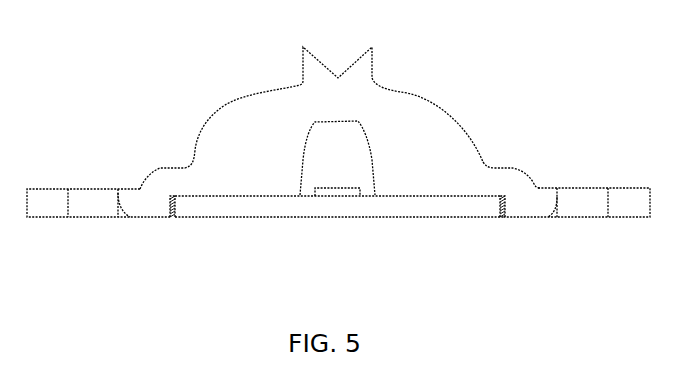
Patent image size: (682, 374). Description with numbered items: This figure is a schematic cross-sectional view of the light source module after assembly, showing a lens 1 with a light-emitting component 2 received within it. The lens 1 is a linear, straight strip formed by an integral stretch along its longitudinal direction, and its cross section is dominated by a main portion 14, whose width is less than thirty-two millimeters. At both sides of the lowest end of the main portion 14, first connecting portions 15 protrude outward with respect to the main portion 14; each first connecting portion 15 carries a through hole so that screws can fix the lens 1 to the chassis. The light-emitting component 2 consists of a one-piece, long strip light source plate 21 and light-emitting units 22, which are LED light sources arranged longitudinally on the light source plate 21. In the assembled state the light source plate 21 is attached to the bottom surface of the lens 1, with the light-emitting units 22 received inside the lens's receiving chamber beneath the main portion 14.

The lens 1 is at (402, 127).
The main portion 14 is at (472, 172).
The first connecting portion 15 is at (577, 210).
The light-emitting component 2 is at (222, 208).
The light source plate 21 is at (270, 208).
The light-emitting unit 22 is at (328, 190).